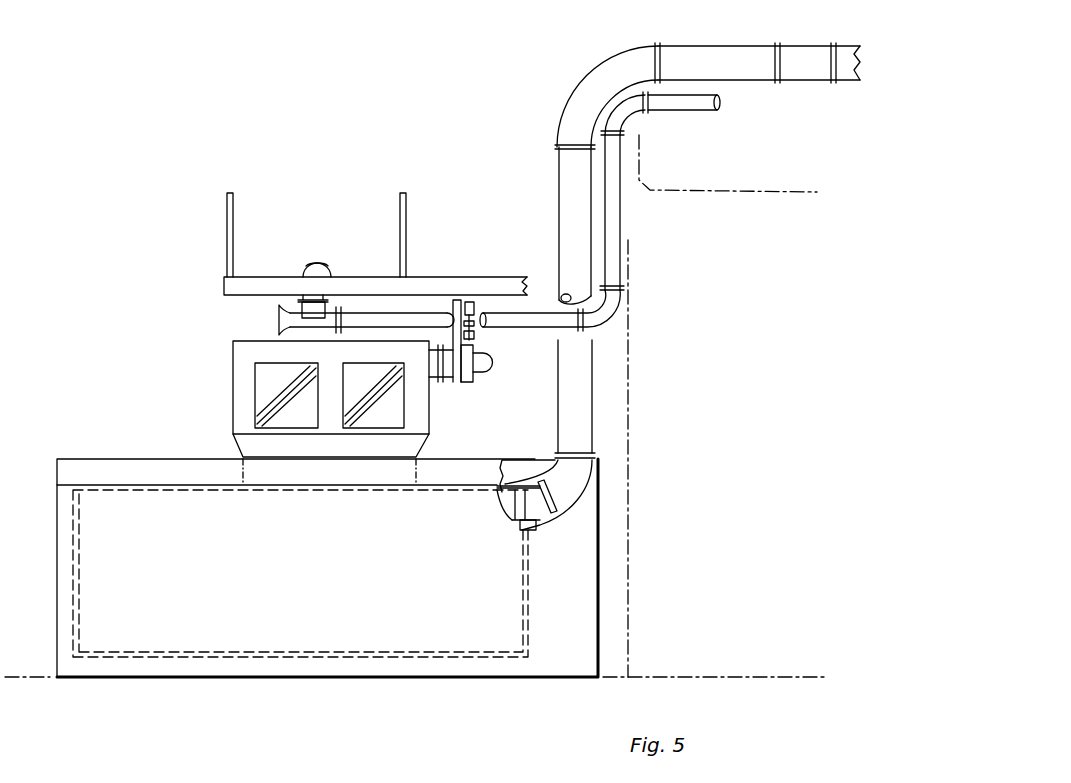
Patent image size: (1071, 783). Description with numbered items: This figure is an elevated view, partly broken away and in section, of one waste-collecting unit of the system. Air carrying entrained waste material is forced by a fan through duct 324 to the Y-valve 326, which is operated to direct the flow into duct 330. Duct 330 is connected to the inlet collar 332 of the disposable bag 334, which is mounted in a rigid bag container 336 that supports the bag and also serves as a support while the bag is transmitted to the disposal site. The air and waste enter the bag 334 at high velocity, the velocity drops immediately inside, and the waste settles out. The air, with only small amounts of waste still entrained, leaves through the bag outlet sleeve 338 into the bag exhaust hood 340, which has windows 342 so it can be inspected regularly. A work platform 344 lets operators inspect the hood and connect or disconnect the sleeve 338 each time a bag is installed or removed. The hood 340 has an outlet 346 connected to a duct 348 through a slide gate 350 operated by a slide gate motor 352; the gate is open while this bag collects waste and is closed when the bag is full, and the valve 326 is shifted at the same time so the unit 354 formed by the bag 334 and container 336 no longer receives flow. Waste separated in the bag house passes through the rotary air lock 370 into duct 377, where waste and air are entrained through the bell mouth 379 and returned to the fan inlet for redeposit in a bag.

The duct 324 is at (846, 70).
The Y-valve 326 is at (793, 52).
The duct 330 is at (565, 170).
The inlet collar 332 is at (540, 528).
The disposable bag 334 is at (512, 480).
The rigid bag container 336 is at (530, 536).
The bag outlet sleeve 338 is at (262, 456).
The bag exhaust hood 340 is at (232, 360).
The windows 342 is at (362, 428).
The work platform 344 is at (80, 458).
The outlet 346 is at (432, 378).
The duct 348 is at (483, 362).
The slide gate 350 is at (473, 340).
The slide gate motor 352 is at (470, 303).
The unit 354 is at (462, 655).
The rotary air lock 370 is at (322, 270).
The duct 377 is at (612, 230).
The bell mouth 379 is at (280, 322).